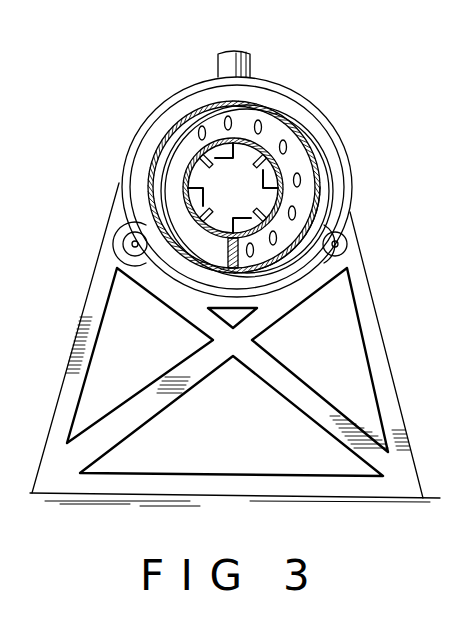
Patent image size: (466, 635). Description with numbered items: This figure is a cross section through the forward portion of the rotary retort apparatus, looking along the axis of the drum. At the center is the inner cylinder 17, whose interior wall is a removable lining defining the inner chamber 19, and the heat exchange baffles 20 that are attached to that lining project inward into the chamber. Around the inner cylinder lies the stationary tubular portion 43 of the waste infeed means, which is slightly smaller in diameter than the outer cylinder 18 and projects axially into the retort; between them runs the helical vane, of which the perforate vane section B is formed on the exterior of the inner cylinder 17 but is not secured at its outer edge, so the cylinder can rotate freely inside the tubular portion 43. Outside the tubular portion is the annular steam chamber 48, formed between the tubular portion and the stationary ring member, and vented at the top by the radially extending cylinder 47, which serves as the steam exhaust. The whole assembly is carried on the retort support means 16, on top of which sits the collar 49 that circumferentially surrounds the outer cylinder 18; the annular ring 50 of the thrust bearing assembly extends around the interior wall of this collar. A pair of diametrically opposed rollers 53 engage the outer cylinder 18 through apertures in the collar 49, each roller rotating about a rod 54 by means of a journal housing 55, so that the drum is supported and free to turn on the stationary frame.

The retort support means 16 is at (383, 342).
The inner cylinder 17 is at (275, 173).
The outer cylinder 18 is at (318, 188).
The inner chamber 19 is at (247, 178).
The heat exchange baffles 20 is at (261, 178).
The stationary tubular portion 43 is at (165, 182).
The radially extending cylinder 47 is at (252, 67).
The annular steam chamber 48 is at (167, 138).
The collar 49 is at (300, 100).
The annular ring 50 is at (313, 133).
The rollers 53 is at (122, 225).
The rods 54 is at (132, 244).
The journal housing 55 is at (125, 248).
The vane section B is at (213, 123).